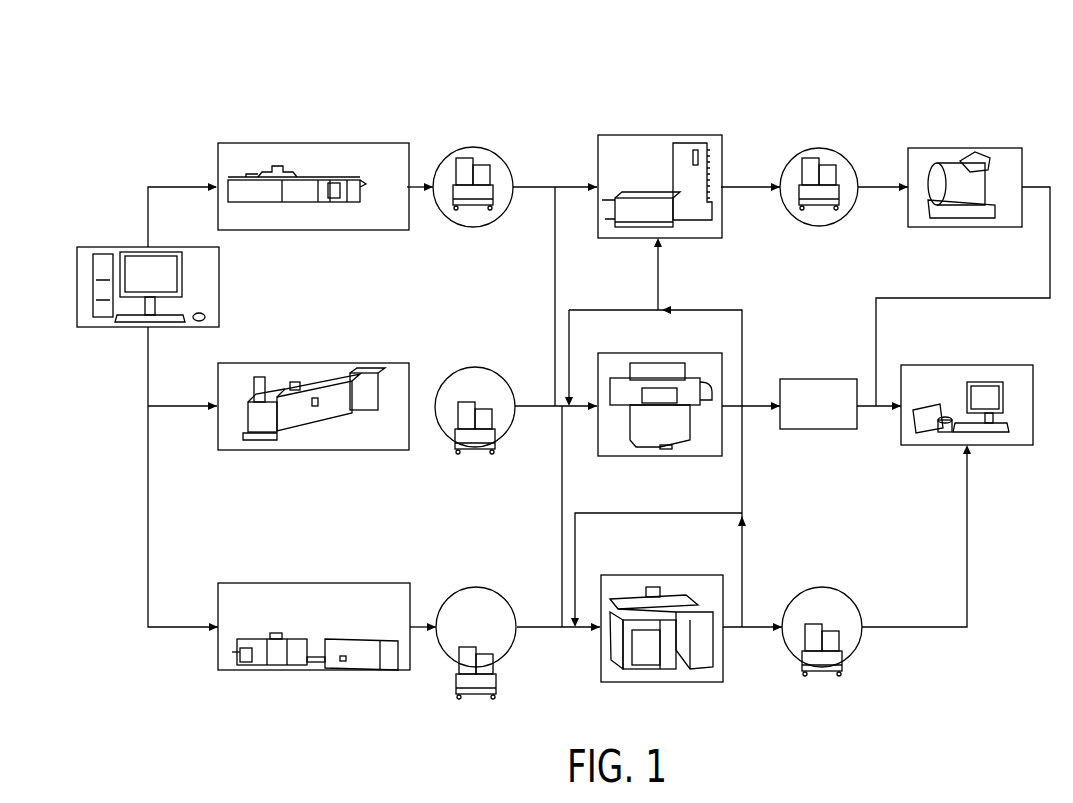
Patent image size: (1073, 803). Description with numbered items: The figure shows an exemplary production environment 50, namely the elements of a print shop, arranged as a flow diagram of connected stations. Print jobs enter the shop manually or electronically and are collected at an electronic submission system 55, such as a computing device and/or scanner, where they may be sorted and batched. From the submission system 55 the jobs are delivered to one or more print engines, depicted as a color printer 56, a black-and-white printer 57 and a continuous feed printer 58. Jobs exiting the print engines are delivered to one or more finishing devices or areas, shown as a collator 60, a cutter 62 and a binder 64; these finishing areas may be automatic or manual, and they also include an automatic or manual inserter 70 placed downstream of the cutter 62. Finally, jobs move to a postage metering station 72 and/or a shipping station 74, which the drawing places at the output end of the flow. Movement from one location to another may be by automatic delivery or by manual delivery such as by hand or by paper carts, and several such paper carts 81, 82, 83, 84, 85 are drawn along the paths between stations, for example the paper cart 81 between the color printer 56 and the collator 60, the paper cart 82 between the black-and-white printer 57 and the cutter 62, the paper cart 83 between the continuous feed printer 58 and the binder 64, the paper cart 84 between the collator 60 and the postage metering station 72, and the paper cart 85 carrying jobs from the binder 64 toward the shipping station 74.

The production environment 50 is at (169, 128).
The electronic submission system 55 is at (107, 327).
The color printer 56 is at (330, 232).
The black-and-white printer 57 is at (331, 452).
The continuous feed printer 58 is at (330, 672).
The collator 60 is at (668, 240).
The cutter 62 is at (668, 457).
The binder 64 is at (670, 680).
The inserter 70 is at (817, 430).
The postage metering station 72 is at (962, 227).
The shipping station 74 is at (992, 445).
The paper cart 81 is at (472, 228).
The paper cart 82 is at (477, 450).
The paper cart 83 is at (476, 681).
The paper cart 84 is at (818, 227).
The paper cart 85 is at (823, 670).